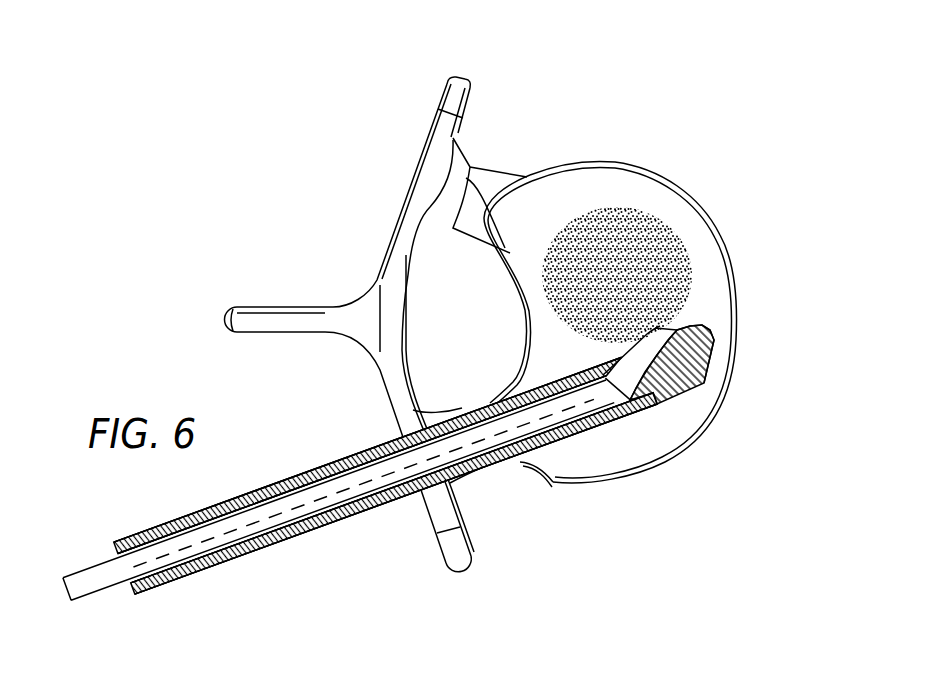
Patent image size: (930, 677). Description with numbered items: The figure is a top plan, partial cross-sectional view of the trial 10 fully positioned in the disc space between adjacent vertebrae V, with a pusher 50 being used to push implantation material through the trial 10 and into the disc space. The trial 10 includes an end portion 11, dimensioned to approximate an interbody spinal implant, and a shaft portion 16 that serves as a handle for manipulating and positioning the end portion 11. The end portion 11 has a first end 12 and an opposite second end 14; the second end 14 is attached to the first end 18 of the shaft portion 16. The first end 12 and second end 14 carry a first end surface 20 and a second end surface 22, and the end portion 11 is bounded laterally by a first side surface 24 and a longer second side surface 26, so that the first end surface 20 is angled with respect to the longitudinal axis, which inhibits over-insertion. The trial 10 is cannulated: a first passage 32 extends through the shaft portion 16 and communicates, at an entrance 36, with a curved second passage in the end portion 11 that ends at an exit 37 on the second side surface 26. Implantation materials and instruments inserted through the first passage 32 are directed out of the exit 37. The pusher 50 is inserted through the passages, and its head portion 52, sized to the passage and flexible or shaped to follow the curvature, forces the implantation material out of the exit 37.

The trial 10 is at (318, 542).
The end portion 11 is at (623, 440).
The first end 12 is at (708, 378).
The second end 14 is at (522, 431).
The shaft portion 16 is at (240, 557).
The first end of the shaft portion 18 is at (478, 409).
The first end surface 20 is at (713, 353).
The second end surface 22 is at (492, 399).
The first side surface 24 is at (560, 440).
The second side surface 26 is at (528, 388).
The first passage 32 is at (387, 477).
The entrance 36 is at (522, 431).
The exit 37 is at (633, 350).
The pusher 50 is at (180, 548).
The head portion 52 is at (628, 390).
The vertebrae V is at (717, 293).